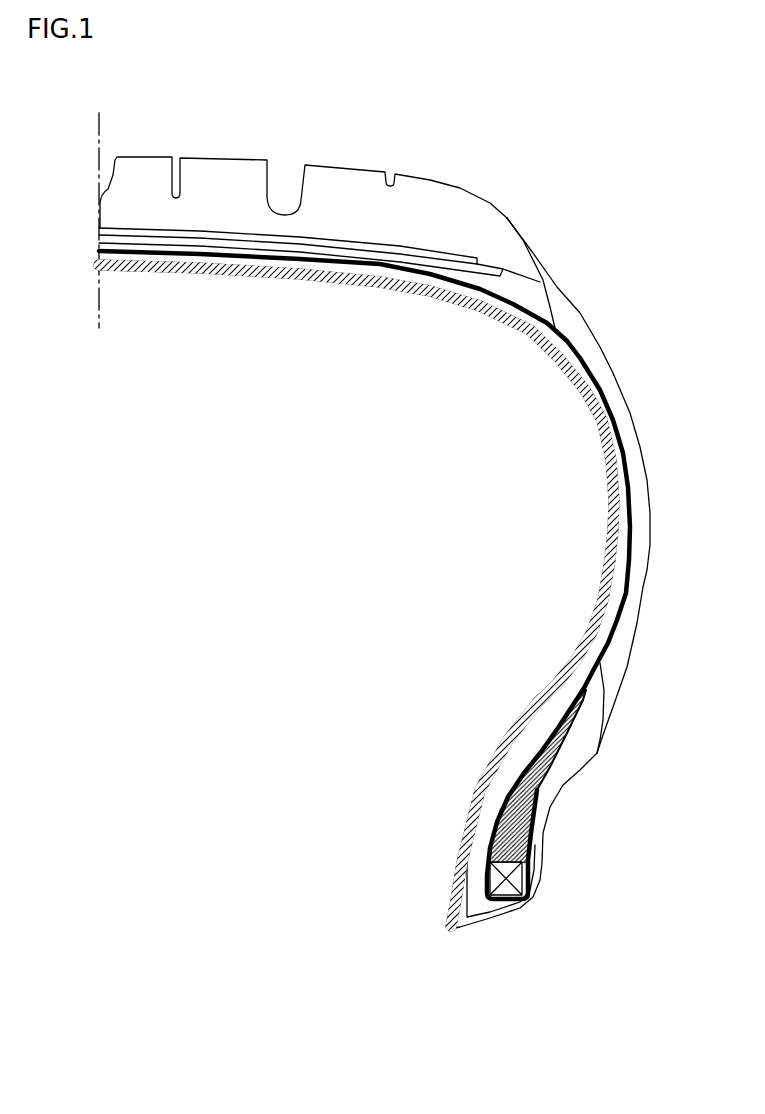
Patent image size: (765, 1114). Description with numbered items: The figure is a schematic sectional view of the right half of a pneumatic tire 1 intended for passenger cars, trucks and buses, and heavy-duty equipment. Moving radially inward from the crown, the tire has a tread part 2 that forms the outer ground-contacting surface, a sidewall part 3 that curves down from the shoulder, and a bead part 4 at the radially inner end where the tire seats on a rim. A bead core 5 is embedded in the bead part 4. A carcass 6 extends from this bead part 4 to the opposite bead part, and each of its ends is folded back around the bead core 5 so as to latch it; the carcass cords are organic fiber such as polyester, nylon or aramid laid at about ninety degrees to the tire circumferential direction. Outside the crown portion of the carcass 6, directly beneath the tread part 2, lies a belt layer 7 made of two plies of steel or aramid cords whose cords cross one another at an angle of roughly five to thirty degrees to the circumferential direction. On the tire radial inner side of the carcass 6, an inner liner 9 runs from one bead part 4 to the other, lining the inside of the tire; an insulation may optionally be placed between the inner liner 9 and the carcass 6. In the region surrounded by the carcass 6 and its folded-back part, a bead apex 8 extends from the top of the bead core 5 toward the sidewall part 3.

The pneumatic tire 1 is at (225, 151).
The tread part 2 is at (362, 170).
The sidewall part 3 is at (650, 471).
The bead part 4 is at (585, 775).
The bead core 5 is at (505, 890).
The carcass 6 is at (618, 624).
The belt layer 7 is at (97, 226).
The bead apex 8 is at (507, 798).
The inner liner 9 is at (580, 656).